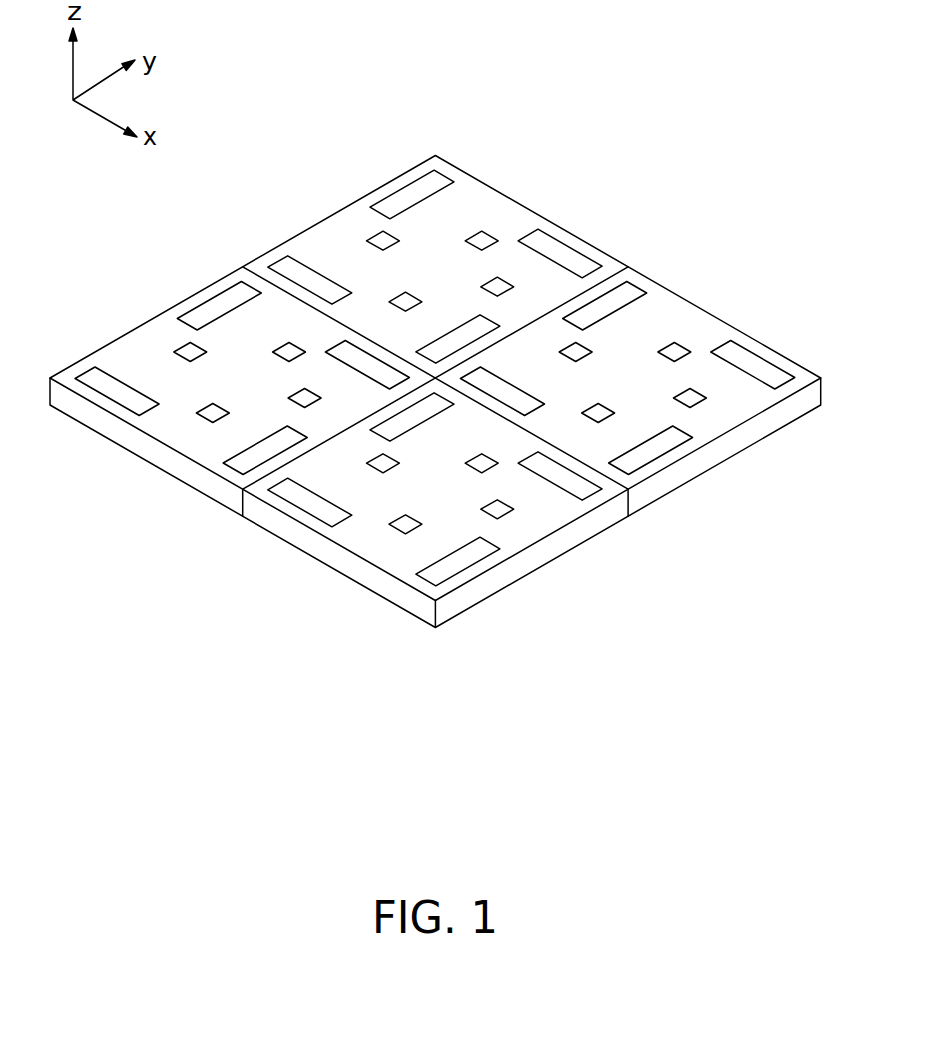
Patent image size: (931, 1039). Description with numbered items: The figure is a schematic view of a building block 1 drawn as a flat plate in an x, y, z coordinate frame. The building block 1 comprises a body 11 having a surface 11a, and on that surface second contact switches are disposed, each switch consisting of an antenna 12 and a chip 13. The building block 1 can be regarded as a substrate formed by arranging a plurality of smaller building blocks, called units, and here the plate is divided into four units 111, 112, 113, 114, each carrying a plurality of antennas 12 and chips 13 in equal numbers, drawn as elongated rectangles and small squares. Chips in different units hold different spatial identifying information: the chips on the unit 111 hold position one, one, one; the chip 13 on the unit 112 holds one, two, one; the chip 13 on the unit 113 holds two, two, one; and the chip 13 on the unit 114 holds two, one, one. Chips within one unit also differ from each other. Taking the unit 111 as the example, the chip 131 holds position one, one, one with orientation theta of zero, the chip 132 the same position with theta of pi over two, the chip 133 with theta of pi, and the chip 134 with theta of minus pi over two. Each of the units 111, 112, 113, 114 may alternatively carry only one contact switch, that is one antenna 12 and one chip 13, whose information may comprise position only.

The building block 1 is at (819, 89).
The body 11 is at (452, 150).
The surface 11a is at (708, 330).
The unit 111 is at (163, 432).
The unit 112 is at (498, 205).
The unit 113 is at (680, 310).
The unit 114 is at (358, 543).
The antenna 12 is at (458, 558).
The chip 13 is at (505, 515).
The chip 131 is at (205, 418).
The chip 132 is at (185, 348).
The chip 133 is at (290, 350).
The chip 134 is at (307, 398).